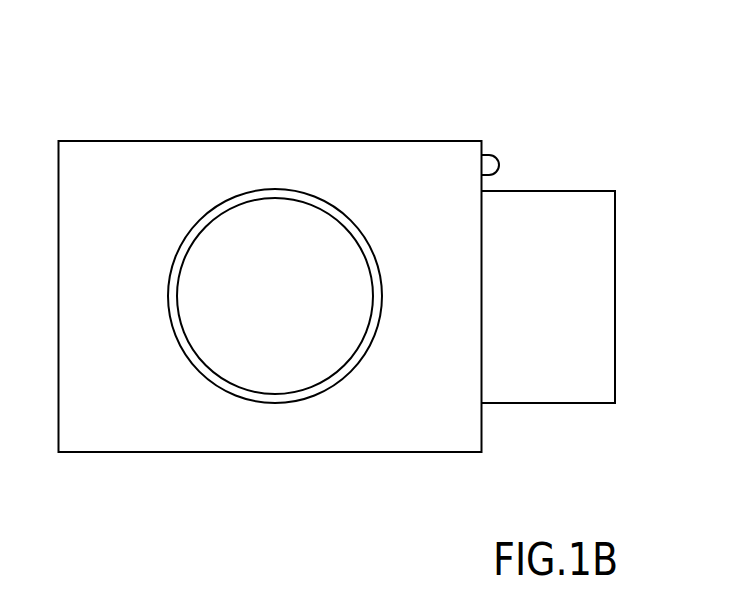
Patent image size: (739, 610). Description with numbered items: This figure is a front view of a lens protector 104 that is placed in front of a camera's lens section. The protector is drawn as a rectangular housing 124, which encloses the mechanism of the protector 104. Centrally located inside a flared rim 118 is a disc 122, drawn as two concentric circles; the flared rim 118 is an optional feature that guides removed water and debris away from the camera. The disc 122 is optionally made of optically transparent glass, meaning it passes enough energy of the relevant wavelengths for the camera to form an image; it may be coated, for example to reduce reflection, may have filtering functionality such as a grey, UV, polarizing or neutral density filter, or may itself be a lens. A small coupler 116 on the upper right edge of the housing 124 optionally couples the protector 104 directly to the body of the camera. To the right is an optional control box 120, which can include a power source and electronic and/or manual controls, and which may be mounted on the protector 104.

The lens protector 104 is at (337, 267).
The coupler 116 is at (498, 166).
The flared rim 118 is at (302, 397).
The control box 120 is at (548, 309).
The disc 122 is at (293, 307).
The housing 124 is at (430, 208).